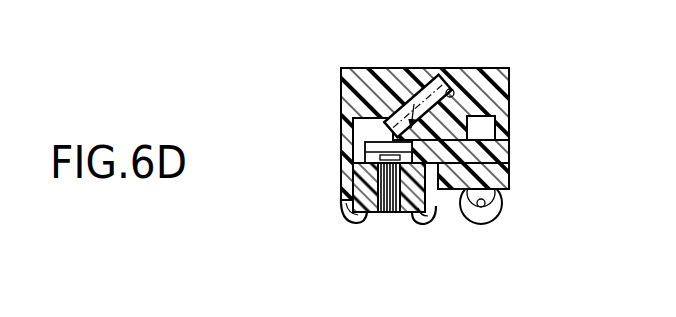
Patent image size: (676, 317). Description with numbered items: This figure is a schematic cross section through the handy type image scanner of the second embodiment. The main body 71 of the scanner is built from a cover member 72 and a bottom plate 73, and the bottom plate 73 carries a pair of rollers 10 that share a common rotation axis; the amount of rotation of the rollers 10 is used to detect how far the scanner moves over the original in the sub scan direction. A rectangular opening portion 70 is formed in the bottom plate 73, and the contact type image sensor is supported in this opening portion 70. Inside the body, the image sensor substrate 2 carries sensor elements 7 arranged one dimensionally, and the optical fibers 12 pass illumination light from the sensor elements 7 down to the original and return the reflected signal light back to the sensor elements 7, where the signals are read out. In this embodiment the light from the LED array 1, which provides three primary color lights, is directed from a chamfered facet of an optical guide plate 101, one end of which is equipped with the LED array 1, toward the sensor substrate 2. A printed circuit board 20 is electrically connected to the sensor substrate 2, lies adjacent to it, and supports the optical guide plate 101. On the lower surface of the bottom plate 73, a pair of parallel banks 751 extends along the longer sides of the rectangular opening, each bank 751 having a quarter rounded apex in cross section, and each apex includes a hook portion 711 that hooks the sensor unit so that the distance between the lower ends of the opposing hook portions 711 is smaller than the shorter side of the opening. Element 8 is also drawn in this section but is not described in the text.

The main body 71 is at (501, 64).
The cover member 72 is at (491, 73).
The image sensor substrate 2 is at (353, 127).
The sensor element 7 is at (390, 138).
The optical guide plate 101 is at (424, 98).
The LED array 1 is at (451, 89).
The printed circuit board 20 is at (494, 150).
The bottom plate 73 is at (506, 171).
The insert member 8 is at (364, 158).
The opening portion 70 is at (345, 196).
The optical fibers 12 is at (390, 213).
The bank 751 is at (353, 222).
The hook portion 711 is at (364, 220).
The roller 10 is at (498, 205).